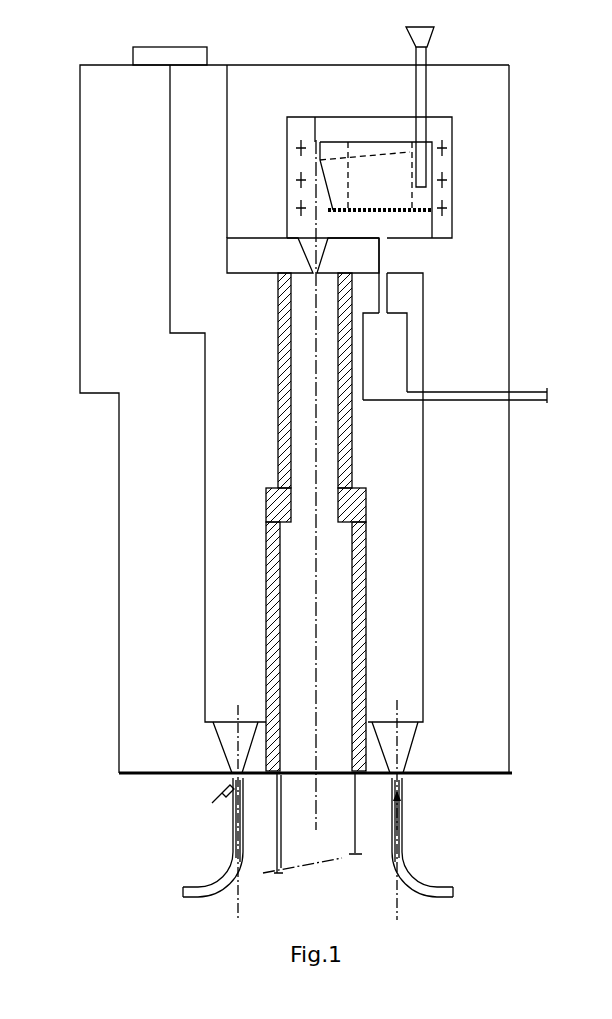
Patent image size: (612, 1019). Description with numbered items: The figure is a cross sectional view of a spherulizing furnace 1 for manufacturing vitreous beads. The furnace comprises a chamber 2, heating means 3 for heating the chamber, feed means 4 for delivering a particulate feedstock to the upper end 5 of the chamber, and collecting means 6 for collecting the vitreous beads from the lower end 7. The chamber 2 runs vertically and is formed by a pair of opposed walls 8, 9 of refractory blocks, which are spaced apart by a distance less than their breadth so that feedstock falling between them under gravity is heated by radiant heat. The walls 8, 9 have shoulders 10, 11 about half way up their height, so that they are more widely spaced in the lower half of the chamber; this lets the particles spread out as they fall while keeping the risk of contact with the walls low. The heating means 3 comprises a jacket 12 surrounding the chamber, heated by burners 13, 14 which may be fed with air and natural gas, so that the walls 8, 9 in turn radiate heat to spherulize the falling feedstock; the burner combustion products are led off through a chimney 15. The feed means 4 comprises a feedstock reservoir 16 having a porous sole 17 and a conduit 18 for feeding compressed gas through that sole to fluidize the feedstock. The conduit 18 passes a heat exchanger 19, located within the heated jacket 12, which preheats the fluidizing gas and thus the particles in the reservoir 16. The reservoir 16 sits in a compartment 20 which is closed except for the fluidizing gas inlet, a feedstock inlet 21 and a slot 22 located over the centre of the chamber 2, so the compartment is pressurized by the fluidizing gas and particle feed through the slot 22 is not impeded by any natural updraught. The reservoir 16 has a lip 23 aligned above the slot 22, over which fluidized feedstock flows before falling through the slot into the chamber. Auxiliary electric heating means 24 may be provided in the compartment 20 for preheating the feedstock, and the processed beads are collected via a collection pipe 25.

The spherulizing furnace 1 is at (84, 62).
The chamber 2 is at (356, 472).
The heating means 3 is at (426, 543).
The feed means 4 is at (326, 114).
The upper end 5 is at (324, 279).
The collecting means 6 is at (351, 862).
The lower end 7 is at (318, 766).
The wall 8 is at (276, 588).
The wall 9 is at (362, 632).
The shoulder 10 is at (280, 511).
The shoulder 11 is at (366, 512).
The jacket 12 is at (230, 418).
The burner 13 is at (238, 818).
The burner 14 is at (397, 832).
The chimney 15 is at (194, 182).
The feedstock reservoir 16 is at (360, 156).
The porous sole 17 is at (362, 214).
The conduit 18 is at (388, 306).
The heat exchanger 19 is at (398, 356).
The compartment 20 is at (456, 127).
The feedstock inlet 21 is at (428, 101).
The slot 22 is at (302, 288).
The lip 23 is at (320, 160).
The auxiliary electric heating means 24 is at (456, 210).
The collection pipe 25 is at (280, 862).